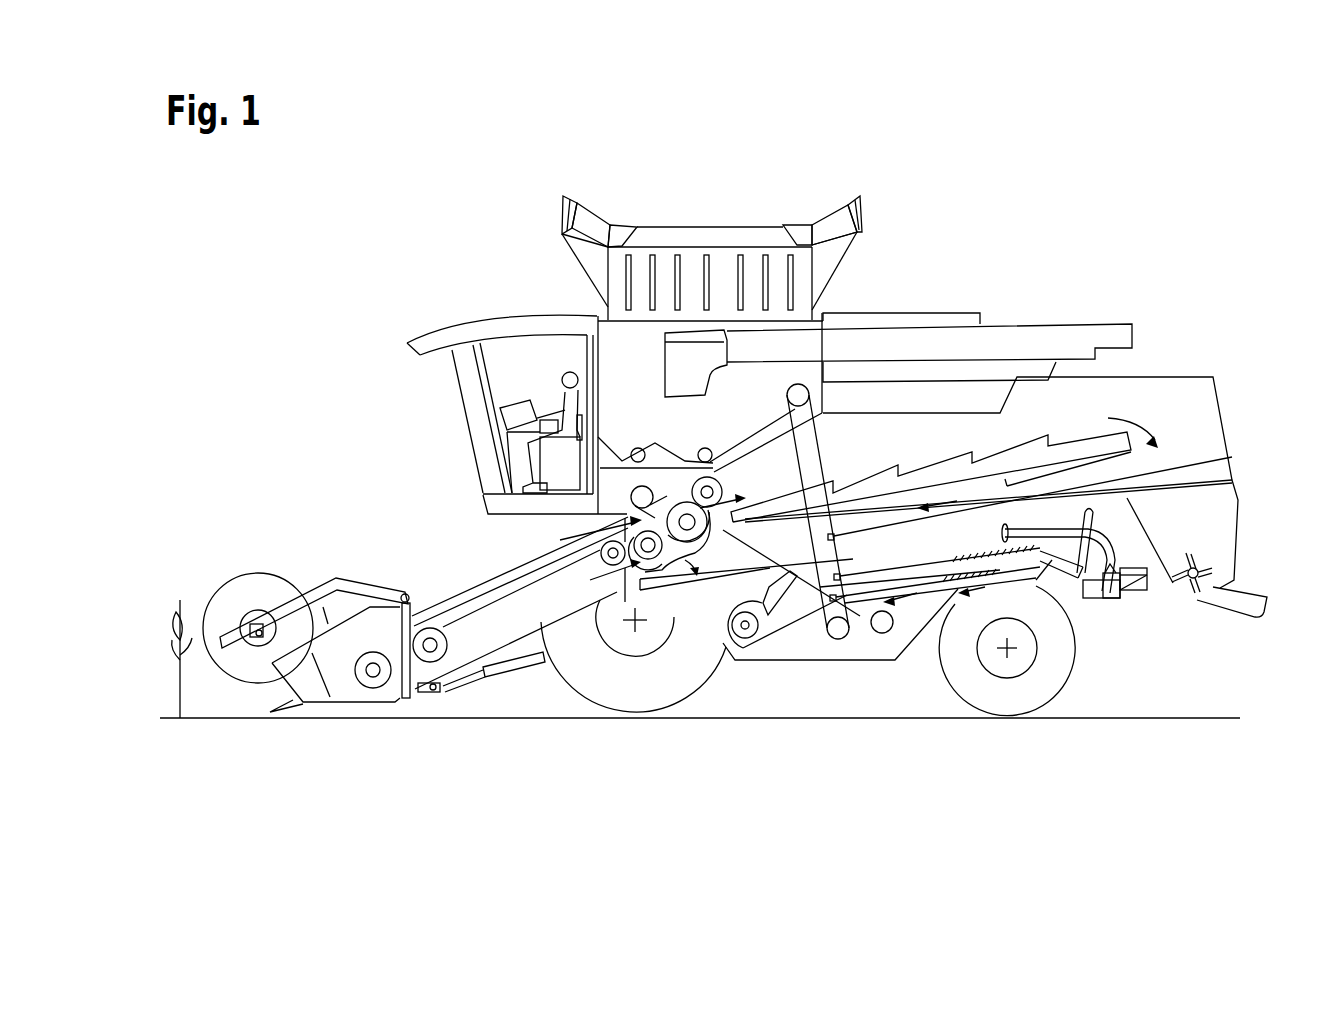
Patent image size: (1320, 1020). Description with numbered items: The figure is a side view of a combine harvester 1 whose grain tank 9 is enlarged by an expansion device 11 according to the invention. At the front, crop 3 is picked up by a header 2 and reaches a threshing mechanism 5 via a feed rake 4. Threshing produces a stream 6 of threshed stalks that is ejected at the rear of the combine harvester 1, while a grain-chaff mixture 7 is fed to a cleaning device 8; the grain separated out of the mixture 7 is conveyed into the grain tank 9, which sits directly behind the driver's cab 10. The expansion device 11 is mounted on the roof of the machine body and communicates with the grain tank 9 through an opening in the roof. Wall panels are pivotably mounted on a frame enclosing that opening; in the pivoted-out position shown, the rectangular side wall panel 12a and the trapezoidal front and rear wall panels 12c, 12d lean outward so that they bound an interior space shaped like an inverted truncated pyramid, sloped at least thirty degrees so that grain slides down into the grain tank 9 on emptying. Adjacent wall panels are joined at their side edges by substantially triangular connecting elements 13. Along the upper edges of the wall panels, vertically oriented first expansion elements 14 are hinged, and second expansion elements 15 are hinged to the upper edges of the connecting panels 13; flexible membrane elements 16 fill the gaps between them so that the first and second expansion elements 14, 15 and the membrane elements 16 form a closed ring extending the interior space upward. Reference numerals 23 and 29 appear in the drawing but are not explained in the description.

The combine harvester 1 is at (382, 426).
The header 2 is at (310, 568).
The crop 3 is at (180, 598).
The feed rake 4 is at (447, 612).
The threshing mechanism 5 is at (600, 530).
The stream of threshed stalks 6 is at (1153, 413).
The grain-chaff mixture 7 is at (937, 503).
The cleaning device 8 is at (875, 646).
The grain tank 9 is at (625, 377).
The driver's cab 10 is at (512, 383).
The expansion device 11 is at (912, 182).
The side wall panel 12a is at (663, 263).
The front wall panel 12c is at (562, 242).
The rear wall panel 12d is at (860, 245).
The connecting elements 13 is at (597, 270).
The first expansion elements 14 is at (565, 210).
The second expansion elements 15 is at (592, 227).
The membrane elements 16 is at (572, 202).
The lower sieve 23 is at (977, 520).
The unloading auger 29 is at (1082, 337).